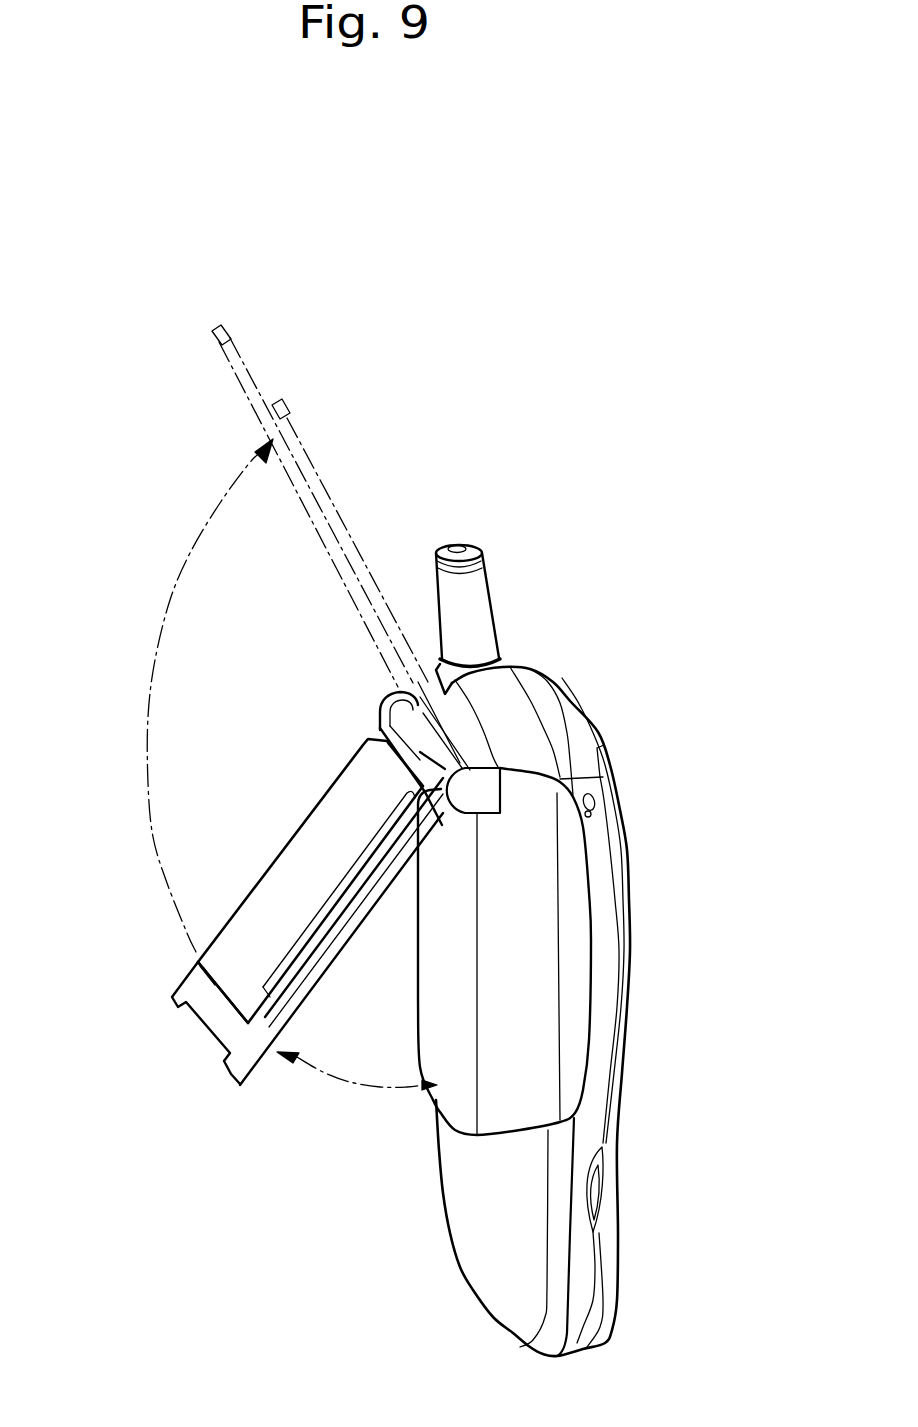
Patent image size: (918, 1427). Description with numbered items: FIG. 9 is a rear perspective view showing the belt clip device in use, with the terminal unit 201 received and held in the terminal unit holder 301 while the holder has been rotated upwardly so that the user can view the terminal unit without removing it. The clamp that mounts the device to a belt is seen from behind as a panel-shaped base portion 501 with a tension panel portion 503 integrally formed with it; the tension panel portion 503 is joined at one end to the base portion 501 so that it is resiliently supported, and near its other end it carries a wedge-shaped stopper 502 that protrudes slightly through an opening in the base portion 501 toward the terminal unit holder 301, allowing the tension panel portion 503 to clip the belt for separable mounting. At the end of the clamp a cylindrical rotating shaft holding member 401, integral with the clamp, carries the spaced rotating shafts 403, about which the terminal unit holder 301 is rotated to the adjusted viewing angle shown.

The terminal unit 201 is at (580, 1142).
The terminal unit holder 301 is at (533, 1010).
The rotating shaft holding member 401 is at (383, 699).
The rotating shaft 403 is at (467, 798).
The base portion 501 is at (228, 1033).
The wedge-shaped stopper 502 is at (243, 1013).
The tension panel portion 503 is at (318, 833).